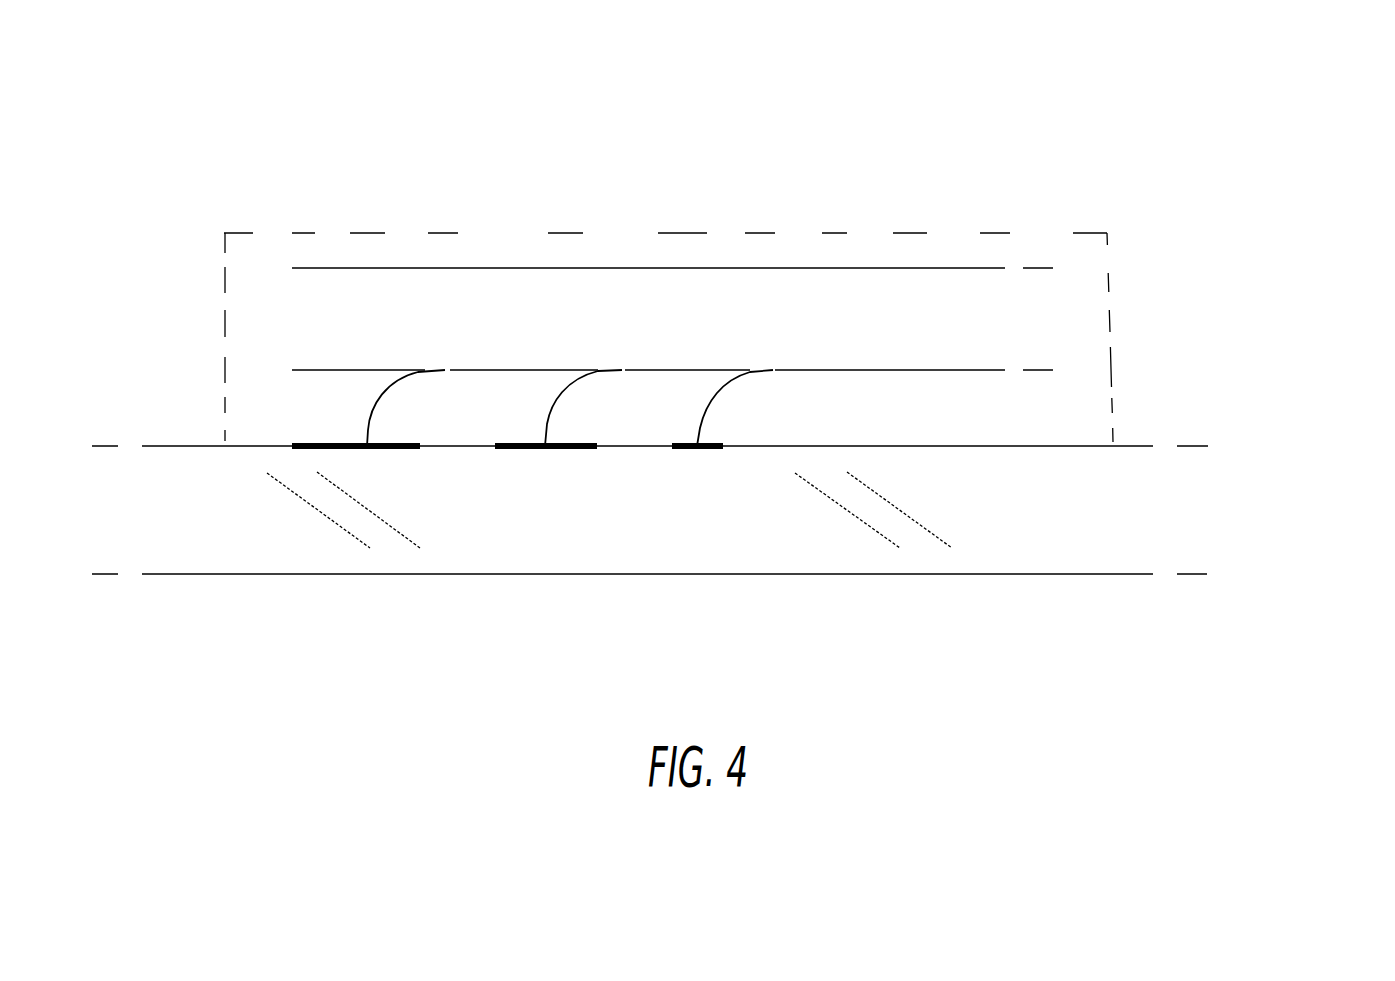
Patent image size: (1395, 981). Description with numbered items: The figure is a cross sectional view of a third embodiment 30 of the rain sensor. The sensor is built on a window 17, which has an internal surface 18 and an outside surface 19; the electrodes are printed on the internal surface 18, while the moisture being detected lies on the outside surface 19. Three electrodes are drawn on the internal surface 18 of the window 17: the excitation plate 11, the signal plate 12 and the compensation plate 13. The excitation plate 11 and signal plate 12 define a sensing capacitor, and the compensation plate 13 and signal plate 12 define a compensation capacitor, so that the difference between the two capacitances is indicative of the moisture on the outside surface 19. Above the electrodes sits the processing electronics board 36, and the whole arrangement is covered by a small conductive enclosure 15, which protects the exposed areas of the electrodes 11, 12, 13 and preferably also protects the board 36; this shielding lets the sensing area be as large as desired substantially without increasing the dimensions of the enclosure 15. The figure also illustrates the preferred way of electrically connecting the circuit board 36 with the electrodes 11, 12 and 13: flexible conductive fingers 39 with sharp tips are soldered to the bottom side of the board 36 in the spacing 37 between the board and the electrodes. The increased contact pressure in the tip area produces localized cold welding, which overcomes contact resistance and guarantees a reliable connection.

The excitation plate 11 is at (361, 456).
The signal plate 12 is at (576, 455).
The compensation plate 13 is at (684, 460).
The conductive enclosure 15 is at (998, 232).
The window 17 is at (683, 510).
The internal surface 18 is at (236, 447).
The outside surface 19 is at (982, 576).
The third embodiment 30 is at (1322, 176).
The processing electronics board 36 is at (681, 316).
The spacing 37 is at (672, 401).
The flexible conductive fingers 39 is at (562, 404).